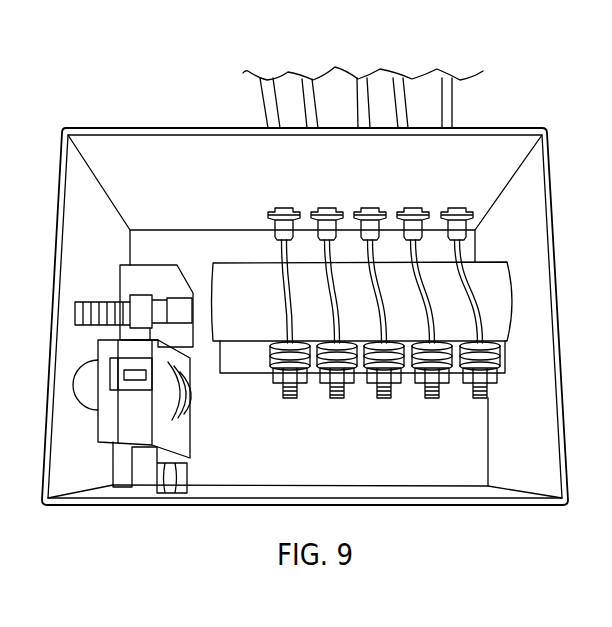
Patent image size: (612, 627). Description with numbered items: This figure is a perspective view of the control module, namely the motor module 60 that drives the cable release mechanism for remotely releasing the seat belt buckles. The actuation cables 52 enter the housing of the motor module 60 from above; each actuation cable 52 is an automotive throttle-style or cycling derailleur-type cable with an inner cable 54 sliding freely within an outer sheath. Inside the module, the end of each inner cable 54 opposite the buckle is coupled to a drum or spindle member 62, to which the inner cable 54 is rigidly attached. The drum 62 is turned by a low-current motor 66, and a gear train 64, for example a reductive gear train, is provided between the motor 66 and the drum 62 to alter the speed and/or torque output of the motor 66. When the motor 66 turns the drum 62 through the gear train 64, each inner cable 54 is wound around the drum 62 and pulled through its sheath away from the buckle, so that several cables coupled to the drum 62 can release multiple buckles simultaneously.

The actuation cable 52 is at (448, 95).
The inner cable 54 is at (275, 254).
The motor module 60 is at (163, 143).
The drum 62 is at (233, 363).
The gear train 64 is at (130, 275).
The motor 66 is at (180, 440).